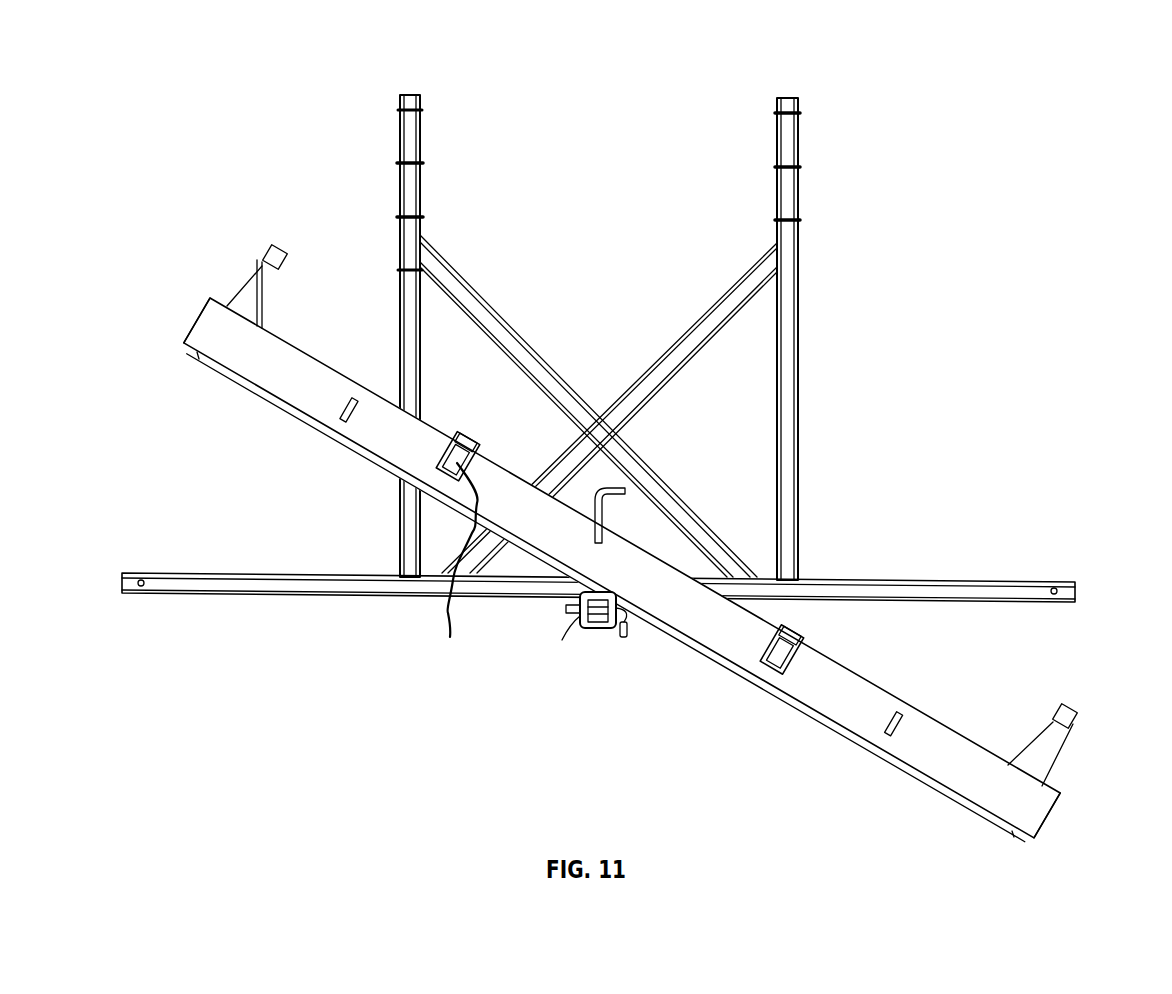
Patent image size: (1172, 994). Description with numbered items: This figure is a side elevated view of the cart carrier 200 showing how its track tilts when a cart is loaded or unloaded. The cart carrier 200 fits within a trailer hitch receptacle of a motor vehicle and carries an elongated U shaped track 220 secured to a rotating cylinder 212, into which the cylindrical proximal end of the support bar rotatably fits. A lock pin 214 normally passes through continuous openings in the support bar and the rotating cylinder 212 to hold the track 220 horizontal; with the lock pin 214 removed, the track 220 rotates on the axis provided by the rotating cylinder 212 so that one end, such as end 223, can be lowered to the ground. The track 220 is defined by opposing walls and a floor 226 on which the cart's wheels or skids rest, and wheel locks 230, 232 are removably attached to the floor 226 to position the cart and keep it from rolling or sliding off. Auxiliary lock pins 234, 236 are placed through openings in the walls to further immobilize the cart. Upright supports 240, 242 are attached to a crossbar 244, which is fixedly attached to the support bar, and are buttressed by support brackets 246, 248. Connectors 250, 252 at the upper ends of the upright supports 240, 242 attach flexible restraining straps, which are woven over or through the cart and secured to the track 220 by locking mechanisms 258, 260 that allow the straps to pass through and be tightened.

The cart carrier 200 is at (629, 472).
The rotating cylinder 212 is at (578, 630).
The lock pin 214 is at (604, 510).
The elongated U shaped track 220 is at (723, 640).
The end of the track 223 is at (200, 318).
The floor 226 is at (1055, 834).
The wheel lock 230 is at (266, 243).
The wheel lock 232 is at (1112, 672).
The auxiliary lock pin 234 is at (354, 424).
The auxiliary lock pin 236 is at (893, 740).
The upright support 240 is at (400, 158).
The upright support 242 is at (805, 140).
The crossbar 244 is at (258, 573).
The support bracket 246 is at (501, 312).
The support bracket 248 is at (700, 322).
The connector 250 is at (426, 207).
The connector 252 is at (772, 219).
The locking mechanism 258 is at (470, 571).
The locking mechanism 260 is at (790, 666).